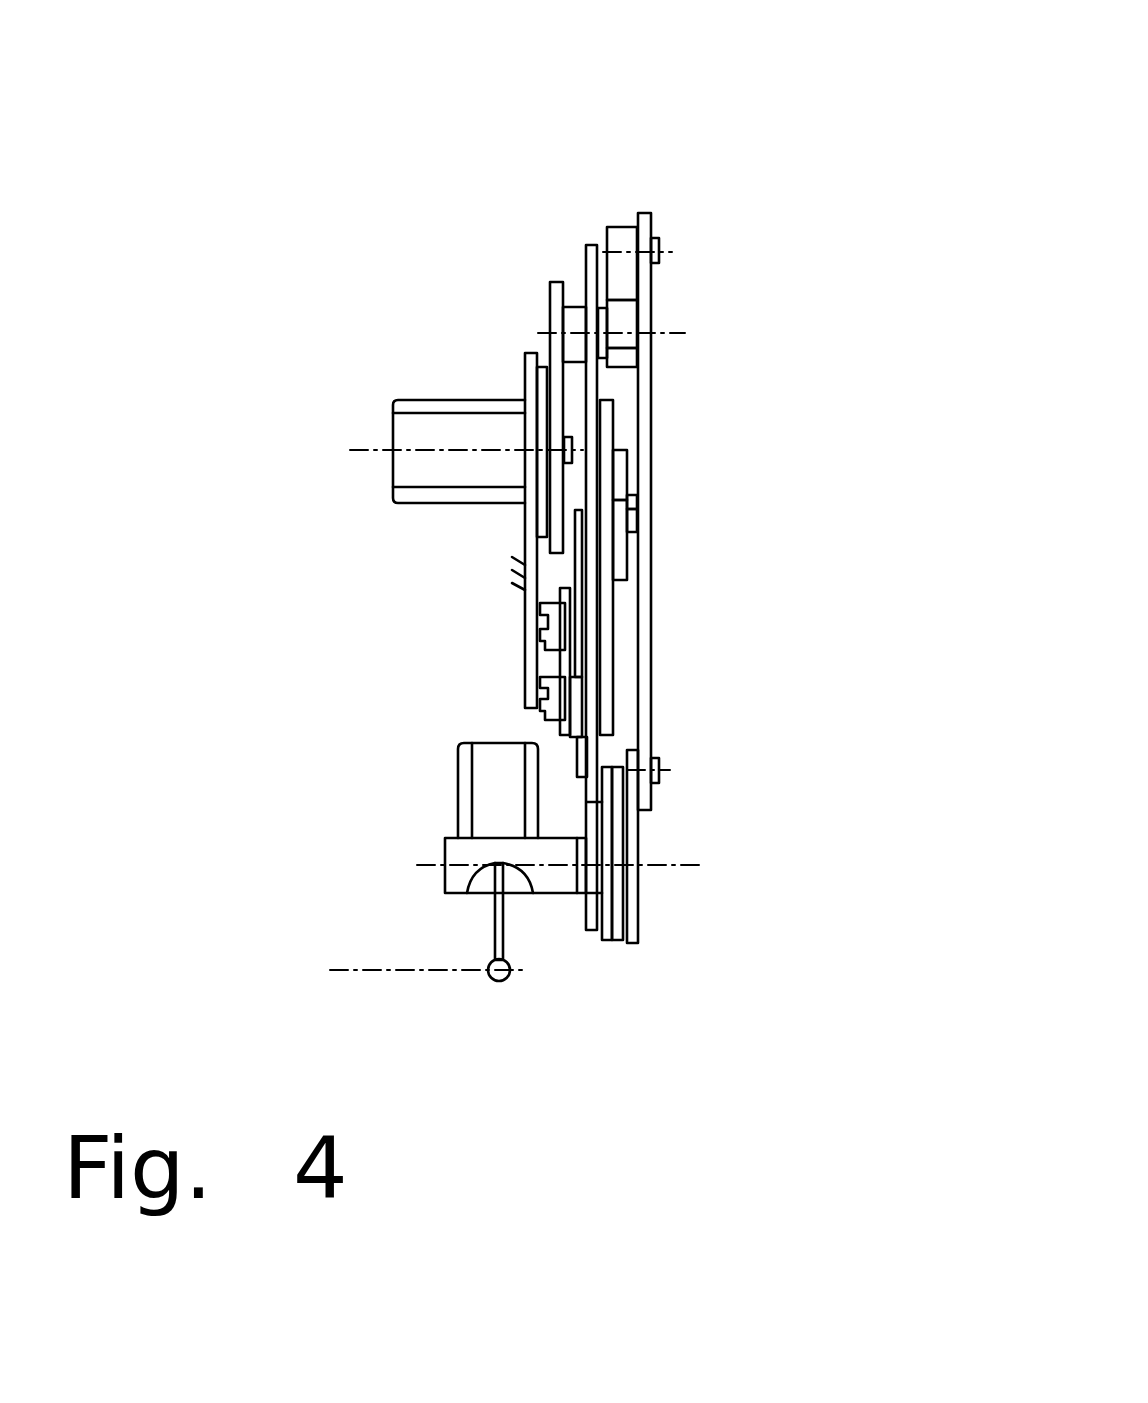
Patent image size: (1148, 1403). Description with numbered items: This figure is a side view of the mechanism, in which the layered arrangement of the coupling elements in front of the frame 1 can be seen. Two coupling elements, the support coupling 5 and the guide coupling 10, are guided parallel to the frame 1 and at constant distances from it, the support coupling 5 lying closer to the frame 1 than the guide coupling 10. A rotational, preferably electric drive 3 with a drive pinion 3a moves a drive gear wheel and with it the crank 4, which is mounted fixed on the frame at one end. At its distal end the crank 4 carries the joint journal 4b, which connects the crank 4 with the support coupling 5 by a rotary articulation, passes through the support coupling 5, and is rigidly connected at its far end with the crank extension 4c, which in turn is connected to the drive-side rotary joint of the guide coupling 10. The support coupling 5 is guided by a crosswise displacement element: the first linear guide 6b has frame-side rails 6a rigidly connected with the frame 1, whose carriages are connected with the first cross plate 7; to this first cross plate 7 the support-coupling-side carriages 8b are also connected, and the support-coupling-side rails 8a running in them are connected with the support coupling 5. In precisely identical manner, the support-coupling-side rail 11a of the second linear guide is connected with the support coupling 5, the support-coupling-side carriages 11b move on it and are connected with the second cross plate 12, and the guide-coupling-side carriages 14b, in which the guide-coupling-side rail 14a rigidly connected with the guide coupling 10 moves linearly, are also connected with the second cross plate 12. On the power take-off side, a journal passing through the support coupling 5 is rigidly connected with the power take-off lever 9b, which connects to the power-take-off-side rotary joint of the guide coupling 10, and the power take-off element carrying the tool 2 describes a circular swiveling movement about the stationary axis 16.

The frame 1 is at (530, 375).
The tool 2 is at (492, 777).
The drive 3 is at (407, 405).
The drive pinion 3a is at (567, 457).
The crank 4 is at (560, 417).
The joint journal 4b is at (575, 320).
The crank extension 4c is at (620, 240).
The support coupling 5 is at (593, 257).
The rail on the frame side 6a is at (543, 622).
The first linear guide 6b is at (543, 642).
The first cross plate 7 is at (563, 668).
The rail on the support coupling side 8a is at (583, 595).
The carriage on the support coupling side 8b is at (575, 705).
The power take-off lever 9b is at (633, 782).
The guide coupling 10 is at (645, 227).
The rail of the 2nd linear guide on the support coupling side 11a is at (607, 425).
The carriage of the 2nd linear guide on the support coupling side 11b is at (613, 470).
The second cross plate 12 is at (622, 482).
The rail of the 2nd linear guide on the guide coupling side 14a is at (627, 503).
The carriage of the 2nd linear guide on the guide coupling side 14b is at (628, 513).
The stationary axis 16 is at (428, 972).